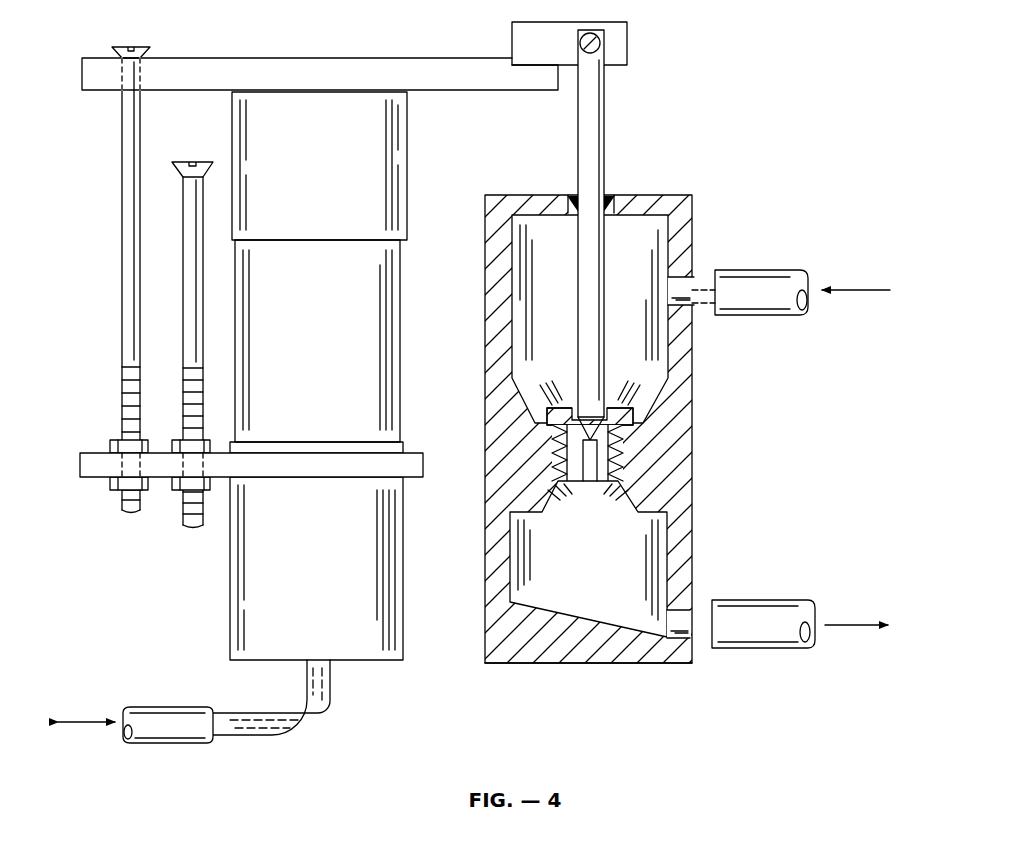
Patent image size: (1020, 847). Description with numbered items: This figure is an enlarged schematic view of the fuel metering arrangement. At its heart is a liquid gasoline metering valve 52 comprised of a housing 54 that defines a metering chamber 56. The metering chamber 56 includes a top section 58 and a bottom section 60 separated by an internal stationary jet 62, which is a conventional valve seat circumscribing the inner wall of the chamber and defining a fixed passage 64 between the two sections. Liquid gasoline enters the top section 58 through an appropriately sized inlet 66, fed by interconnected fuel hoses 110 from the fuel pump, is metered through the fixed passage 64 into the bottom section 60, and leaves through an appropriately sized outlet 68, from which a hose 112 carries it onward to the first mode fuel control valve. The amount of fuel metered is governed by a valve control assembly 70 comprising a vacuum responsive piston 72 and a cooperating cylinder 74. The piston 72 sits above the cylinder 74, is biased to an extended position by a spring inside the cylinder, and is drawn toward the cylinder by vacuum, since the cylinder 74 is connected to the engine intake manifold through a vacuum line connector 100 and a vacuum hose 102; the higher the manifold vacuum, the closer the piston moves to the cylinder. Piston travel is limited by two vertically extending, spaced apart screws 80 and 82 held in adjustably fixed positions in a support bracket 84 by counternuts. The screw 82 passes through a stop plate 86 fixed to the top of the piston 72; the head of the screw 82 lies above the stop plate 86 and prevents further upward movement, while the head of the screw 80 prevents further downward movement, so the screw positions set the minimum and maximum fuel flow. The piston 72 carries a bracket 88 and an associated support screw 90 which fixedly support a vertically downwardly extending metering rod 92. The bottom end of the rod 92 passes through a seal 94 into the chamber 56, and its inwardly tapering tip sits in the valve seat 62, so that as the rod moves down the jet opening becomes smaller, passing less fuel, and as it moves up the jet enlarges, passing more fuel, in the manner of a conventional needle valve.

The liquid gasoline metering valve 52 is at (542, 666).
The housing 54 is at (630, 654).
The metering chamber 56 is at (642, 252).
The top section 58 is at (616, 335).
The bottom section 60 is at (605, 575).
The internal stationary jet 62 is at (622, 441).
The fixed passage 64 is at (612, 458).
The inlet 66 is at (705, 306).
The outlet 68 is at (697, 641).
The valve control assembly 70 is at (386, 667).
The vacuum responsive piston 72 is at (358, 338).
The cylinder 74 is at (245, 595).
The screw 80 is at (193, 272).
The screw 82 is at (127, 272).
The support bracket 84 is at (100, 467).
The stop plate 86 is at (245, 68).
The bracket 88 is at (520, 38).
The support screw 90 is at (601, 43).
The metering rod 92 is at (592, 147).
The seal 94 is at (610, 195).
The vacuum line connector 100 is at (327, 703).
The vacuum hose 102 is at (178, 733).
The fuel hoses 110 is at (768, 280).
The hose 112 is at (757, 615).